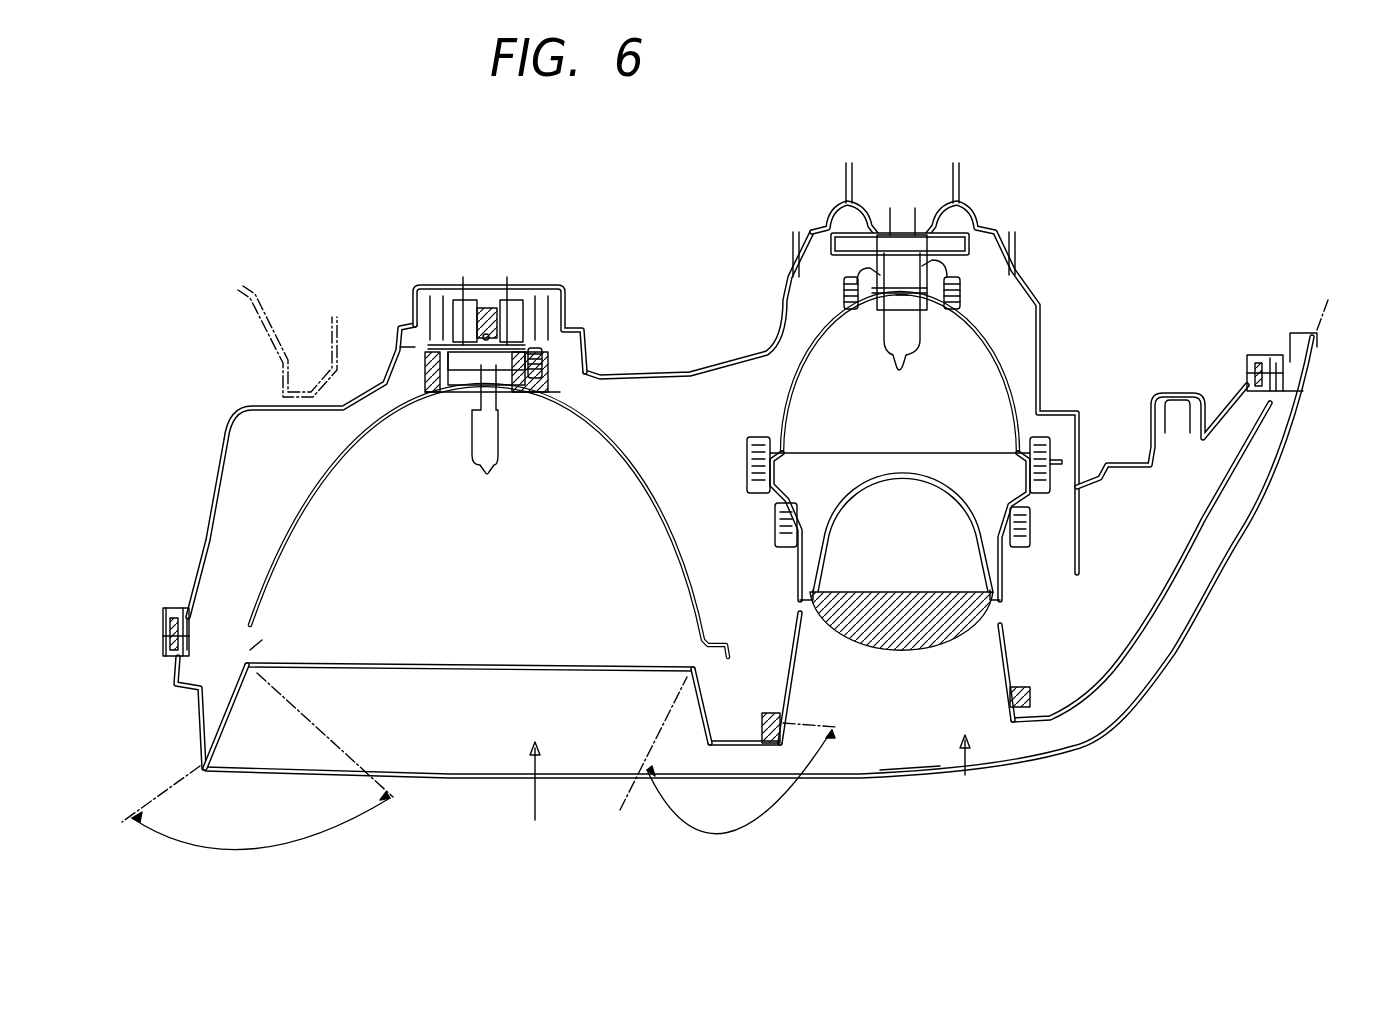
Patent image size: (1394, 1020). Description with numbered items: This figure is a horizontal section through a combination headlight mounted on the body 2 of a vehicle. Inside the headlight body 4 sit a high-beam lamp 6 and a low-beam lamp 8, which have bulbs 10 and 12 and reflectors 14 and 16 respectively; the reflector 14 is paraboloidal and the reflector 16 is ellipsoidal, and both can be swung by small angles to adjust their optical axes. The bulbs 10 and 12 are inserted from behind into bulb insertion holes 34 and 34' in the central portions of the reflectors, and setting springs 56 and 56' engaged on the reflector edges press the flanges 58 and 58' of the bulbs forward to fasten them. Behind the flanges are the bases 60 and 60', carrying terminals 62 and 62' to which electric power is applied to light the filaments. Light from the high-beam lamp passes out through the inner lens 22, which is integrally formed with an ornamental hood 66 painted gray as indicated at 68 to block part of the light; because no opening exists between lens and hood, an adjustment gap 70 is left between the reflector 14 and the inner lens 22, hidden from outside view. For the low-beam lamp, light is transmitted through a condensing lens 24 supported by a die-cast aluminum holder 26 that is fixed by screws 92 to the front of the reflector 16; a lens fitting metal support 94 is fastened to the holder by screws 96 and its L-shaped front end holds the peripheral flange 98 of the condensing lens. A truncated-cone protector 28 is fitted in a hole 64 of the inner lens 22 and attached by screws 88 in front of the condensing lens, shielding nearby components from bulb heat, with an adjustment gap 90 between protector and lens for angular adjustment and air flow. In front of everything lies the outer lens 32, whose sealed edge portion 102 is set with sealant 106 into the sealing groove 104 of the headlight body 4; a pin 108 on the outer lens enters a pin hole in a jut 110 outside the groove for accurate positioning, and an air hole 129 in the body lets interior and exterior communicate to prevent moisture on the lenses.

The vehicle body 2 is at (253, 300).
The headlight body 4 is at (668, 373).
The high-beam lamp 6 is at (522, 852).
The low-beam lamp 8 is at (984, 857).
The bulb 10 is at (492, 468).
The bulb 12 is at (920, 352).
The reflector 14 is at (305, 530).
The reflector 16 is at (1003, 363).
The inner lens 22 is at (1200, 593).
The condensing lens 24 is at (960, 645).
The holder 26 is at (1030, 525).
The protector 28 is at (800, 680).
The outer lens 32 is at (1245, 545).
The bulb insertion hole 34 is at (473, 406).
The bulb insertion hole 34' is at (879, 339).
The setting spring 56 is at (463, 324).
The setting spring 56' is at (968, 272).
The flange 58 is at (524, 404).
The flange 58' is at (902, 219).
The base 60 is at (455, 272).
The base 60' is at (872, 164).
The terminal 62 is at (508, 272).
The terminal 62' is at (933, 164).
The hole 64 is at (910, 752).
The hood 66 is at (232, 718).
The gray paint 68 is at (275, 873).
The adjustment gap 70 is at (258, 640).
The screw 88 is at (770, 713).
The adjustment gap 90 is at (800, 610).
The screw 92 is at (757, 437).
The lens fitting metal support 94 is at (805, 593).
The screw 96 is at (778, 540).
The peripheral flange 98 is at (825, 590).
The sealed edge portion 102 is at (166, 646).
The sealing groove 104 is at (192, 637).
The sealant 106 is at (166, 628).
The pin 108 is at (1293, 362).
The jut 110 is at (1300, 392).
The air hole 129 is at (1170, 398).